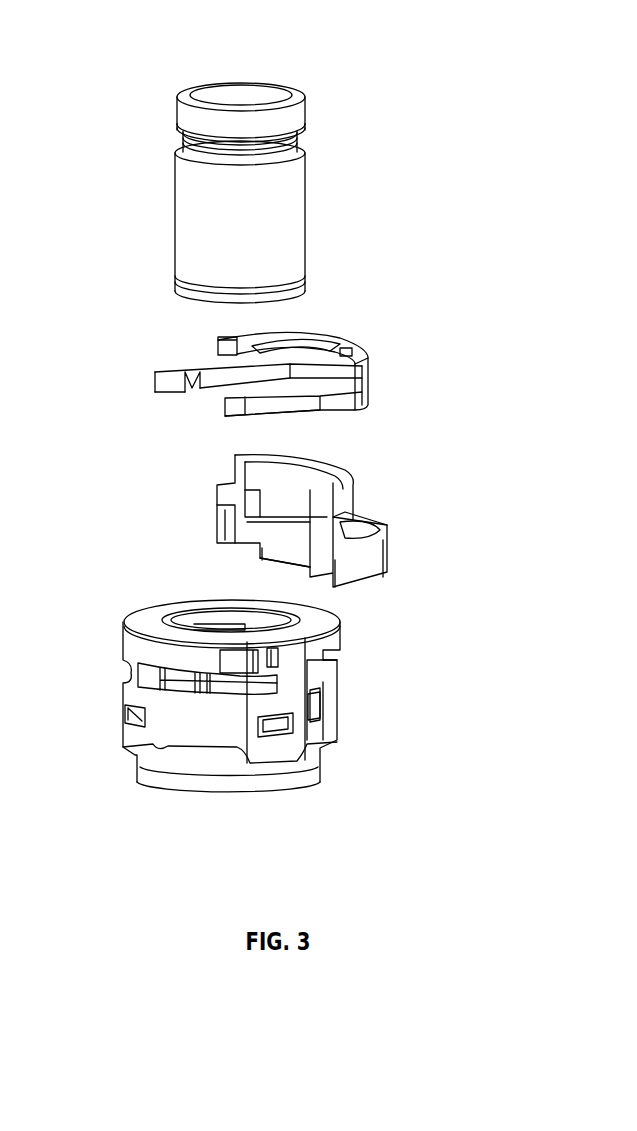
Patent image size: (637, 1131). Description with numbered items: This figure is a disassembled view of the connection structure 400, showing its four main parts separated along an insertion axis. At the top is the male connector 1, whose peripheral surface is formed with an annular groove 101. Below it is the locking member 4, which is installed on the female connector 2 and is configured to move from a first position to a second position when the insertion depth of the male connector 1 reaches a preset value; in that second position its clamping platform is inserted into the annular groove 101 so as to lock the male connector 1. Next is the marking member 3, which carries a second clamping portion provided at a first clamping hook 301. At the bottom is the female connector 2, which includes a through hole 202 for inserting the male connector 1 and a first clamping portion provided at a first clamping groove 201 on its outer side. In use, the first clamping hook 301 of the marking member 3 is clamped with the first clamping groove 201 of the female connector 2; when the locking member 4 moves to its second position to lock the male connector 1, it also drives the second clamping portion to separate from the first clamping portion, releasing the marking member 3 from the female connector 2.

The connection structure 400 is at (222, 34).
The male connector 1 is at (277, 220).
The annular groove 101 is at (187, 148).
The locking member 4 is at (370, 367).
The marking member 3 is at (357, 567).
The first clamping hook 301 is at (310, 558).
The female connector 2 is at (307, 770).
The first clamping groove 201 is at (303, 707).
The through hole 202 is at (220, 625).